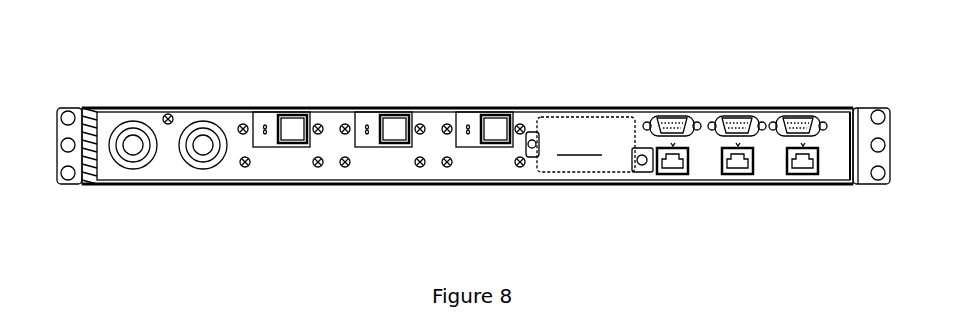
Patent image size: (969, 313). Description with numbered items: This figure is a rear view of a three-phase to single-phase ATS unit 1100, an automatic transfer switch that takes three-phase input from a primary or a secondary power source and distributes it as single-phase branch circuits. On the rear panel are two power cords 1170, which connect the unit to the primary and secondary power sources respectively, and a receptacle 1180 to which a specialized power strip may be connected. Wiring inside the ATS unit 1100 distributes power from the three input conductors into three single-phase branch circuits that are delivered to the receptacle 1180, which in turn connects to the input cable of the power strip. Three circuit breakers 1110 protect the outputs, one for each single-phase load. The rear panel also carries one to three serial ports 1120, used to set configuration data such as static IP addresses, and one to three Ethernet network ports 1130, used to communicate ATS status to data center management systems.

The three-phase to single-phase ATS unit 1100 is at (130, 107).
The circuit breakers 1110 is at (478, 108).
The serial ports 1120 is at (797, 102).
The Ethernet network ports 1130 is at (797, 190).
The power cords 1170 is at (197, 162).
The receptacle 1180 is at (586, 144).